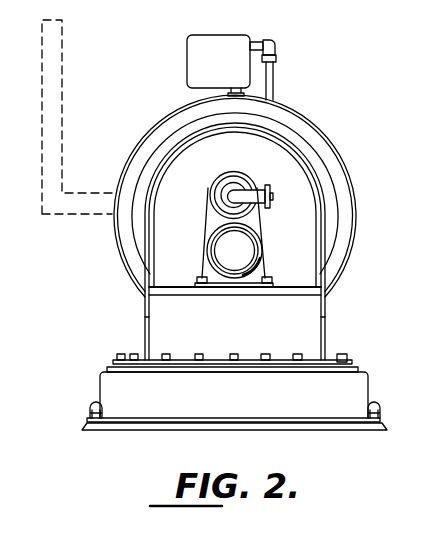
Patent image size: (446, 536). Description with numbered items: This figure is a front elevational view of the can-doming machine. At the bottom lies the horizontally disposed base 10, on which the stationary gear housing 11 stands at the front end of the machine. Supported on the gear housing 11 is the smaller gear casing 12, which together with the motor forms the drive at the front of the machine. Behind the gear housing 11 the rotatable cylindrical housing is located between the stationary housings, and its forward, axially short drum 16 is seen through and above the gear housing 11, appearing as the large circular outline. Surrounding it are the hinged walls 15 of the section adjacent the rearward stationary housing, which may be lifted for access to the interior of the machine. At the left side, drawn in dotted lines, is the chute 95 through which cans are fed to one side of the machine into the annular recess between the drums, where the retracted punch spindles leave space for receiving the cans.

The base 10 is at (352, 387).
The stationary gear housing 11 is at (307, 275).
The gear casing 12 is at (237, 252).
The hinged walls 15 is at (333, 147).
The forward drum 16 is at (278, 122).
The chute 95 is at (55, 86).